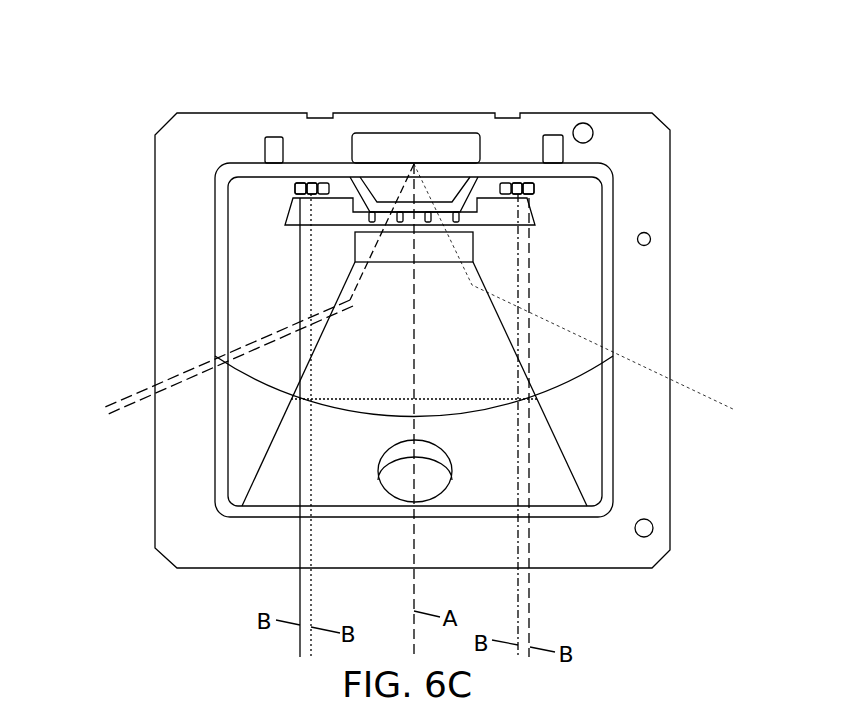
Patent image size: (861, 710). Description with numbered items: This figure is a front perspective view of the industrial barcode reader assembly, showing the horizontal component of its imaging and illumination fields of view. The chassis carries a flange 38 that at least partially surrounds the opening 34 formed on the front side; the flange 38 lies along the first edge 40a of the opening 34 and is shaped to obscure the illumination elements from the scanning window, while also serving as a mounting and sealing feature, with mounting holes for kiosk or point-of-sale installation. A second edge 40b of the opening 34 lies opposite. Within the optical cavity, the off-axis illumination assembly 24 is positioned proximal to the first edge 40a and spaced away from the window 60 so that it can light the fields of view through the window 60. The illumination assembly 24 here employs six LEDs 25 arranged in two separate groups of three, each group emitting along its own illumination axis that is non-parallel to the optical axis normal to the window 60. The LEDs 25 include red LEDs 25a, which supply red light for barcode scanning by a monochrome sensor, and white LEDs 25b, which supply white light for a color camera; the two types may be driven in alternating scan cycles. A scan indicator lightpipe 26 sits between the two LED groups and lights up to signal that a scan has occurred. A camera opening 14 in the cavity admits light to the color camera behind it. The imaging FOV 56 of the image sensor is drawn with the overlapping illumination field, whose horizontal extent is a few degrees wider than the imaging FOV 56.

The camera opening 14 is at (402, 478).
The illumination assembly 24 is at (416, 136).
The LEDs 25 is at (284, 198).
The red LEDs 25a is at (306, 182).
The white LEDs 25b is at (325, 183).
The scan indicator lightpipe 26 is at (390, 178).
The opening 34 is at (594, 460).
The flange 38 is at (648, 178).
The first edge 40a is at (565, 140).
The inner frame 40b is at (550, 515).
The imaging FOV 56 is at (243, 387).
The first window 60 is at (240, 473).